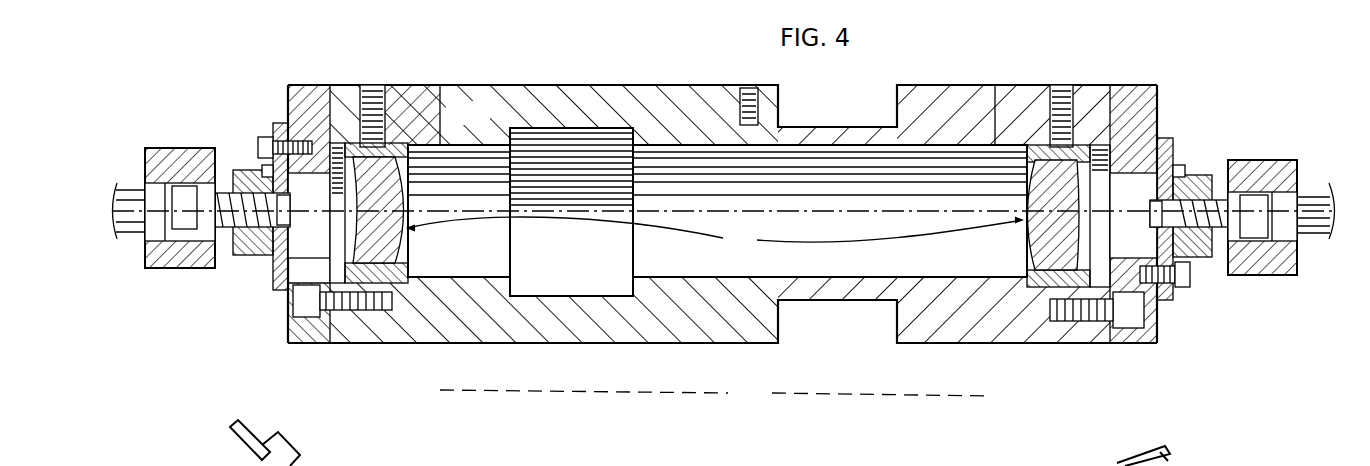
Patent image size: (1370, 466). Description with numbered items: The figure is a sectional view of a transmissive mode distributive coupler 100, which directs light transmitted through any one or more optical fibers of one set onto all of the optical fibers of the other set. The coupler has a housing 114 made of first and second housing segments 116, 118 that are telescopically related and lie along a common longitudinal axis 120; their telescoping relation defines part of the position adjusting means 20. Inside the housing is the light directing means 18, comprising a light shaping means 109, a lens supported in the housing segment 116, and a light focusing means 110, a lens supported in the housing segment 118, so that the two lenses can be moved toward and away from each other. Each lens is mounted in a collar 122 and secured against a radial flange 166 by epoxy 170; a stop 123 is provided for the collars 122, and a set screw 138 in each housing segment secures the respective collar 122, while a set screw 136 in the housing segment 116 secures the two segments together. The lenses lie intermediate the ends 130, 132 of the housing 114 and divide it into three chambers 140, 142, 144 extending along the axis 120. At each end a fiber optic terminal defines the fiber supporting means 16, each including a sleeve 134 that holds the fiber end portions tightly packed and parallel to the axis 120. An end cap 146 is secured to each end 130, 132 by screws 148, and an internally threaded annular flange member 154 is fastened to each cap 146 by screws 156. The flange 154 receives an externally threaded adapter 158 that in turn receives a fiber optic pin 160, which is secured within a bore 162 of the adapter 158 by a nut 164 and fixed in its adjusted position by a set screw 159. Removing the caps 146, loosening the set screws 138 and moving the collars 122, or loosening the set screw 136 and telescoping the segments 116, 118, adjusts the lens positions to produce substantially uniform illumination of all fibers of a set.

The fiber supporting means 16 is at (232, 145).
The light directing means 18 is at (715, 234).
The position adjusting means 20 is at (393, 292).
The transmissive mode distributive coupler 100 is at (877, 100).
The light shaping means 109 is at (406, 194).
The light focusing means 110 is at (1046, 195).
The housing 114 is at (597, 85).
The first housing segment 116 is at (528, 320).
The second housing segment 118 is at (930, 316).
The common longitudinal axis 120 is at (792, 212).
The collar 122 is at (440, 86).
The stop 123 is at (398, 268).
The end of housing 130 is at (292, 85).
The end of housing 132 is at (1153, 90).
The sleeve 134 is at (241, 256).
The set screw 136 is at (758, 90).
The set screw 138 is at (376, 86).
The chamber 140 is at (290, 297).
The chamber 142 is at (820, 258).
The chamber 144 is at (1097, 290).
The end cap 146 is at (308, 332).
The screw 148 is at (345, 328).
The internally threaded annular flange member 154 is at (272, 272).
The screw 156 is at (298, 142).
The externally threaded adapter 158 is at (193, 262).
The set screw 159 is at (264, 166).
The fiber optic pin 160 is at (185, 188).
The bore 162 is at (330, 183).
The nut 164 is at (140, 262).
The radial flange 166 is at (296, 281).
The epoxy 170 is at (415, 158).